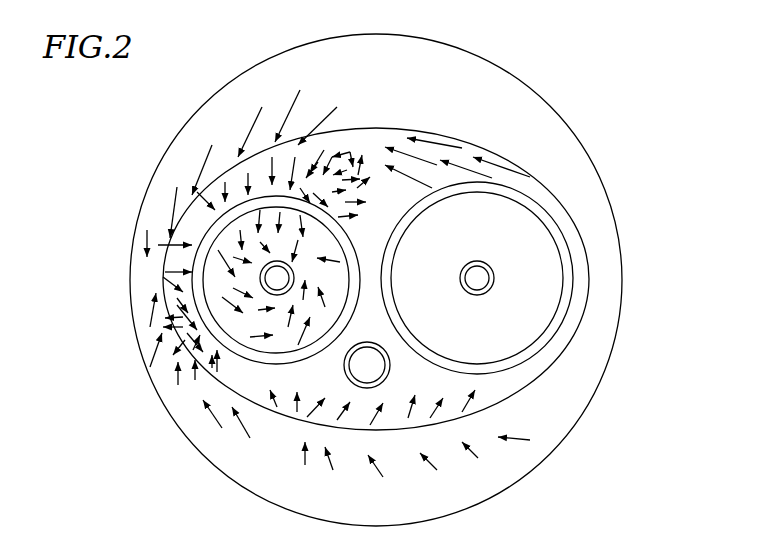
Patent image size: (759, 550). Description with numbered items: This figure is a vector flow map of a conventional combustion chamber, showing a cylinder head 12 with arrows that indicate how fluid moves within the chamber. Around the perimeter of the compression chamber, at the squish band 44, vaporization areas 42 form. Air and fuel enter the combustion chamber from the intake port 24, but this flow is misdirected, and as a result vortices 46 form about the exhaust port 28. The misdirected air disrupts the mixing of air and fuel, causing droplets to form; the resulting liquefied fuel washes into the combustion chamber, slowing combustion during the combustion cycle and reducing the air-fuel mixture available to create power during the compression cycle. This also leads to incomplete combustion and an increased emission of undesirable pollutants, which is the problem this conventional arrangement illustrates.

The cylinder head 12 is at (604, 132).
The intake port 24 is at (545, 278).
The exhaust port 28 is at (215, 284).
The vaporization areas 42 is at (490, 410).
The squish band 44 is at (500, 103).
The vortices 46 is at (307, 155).